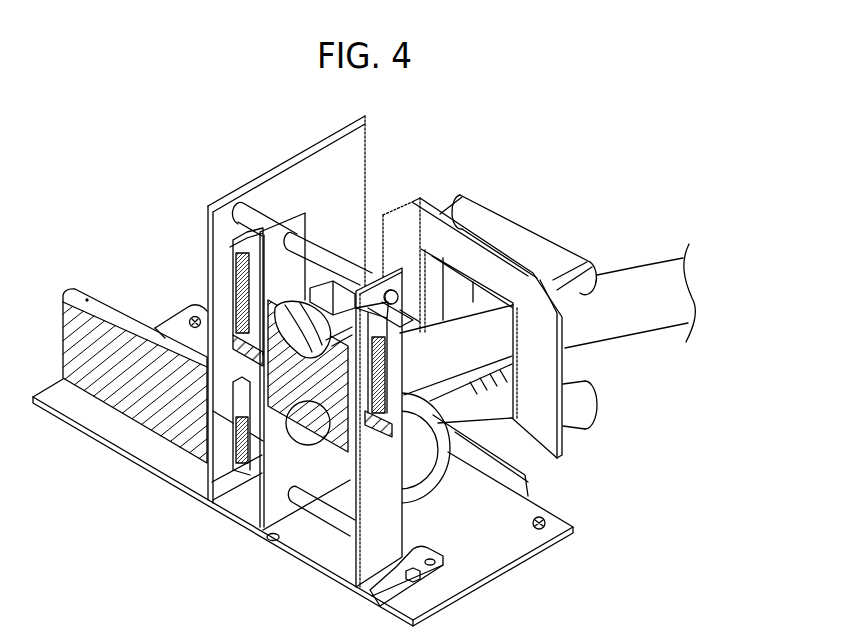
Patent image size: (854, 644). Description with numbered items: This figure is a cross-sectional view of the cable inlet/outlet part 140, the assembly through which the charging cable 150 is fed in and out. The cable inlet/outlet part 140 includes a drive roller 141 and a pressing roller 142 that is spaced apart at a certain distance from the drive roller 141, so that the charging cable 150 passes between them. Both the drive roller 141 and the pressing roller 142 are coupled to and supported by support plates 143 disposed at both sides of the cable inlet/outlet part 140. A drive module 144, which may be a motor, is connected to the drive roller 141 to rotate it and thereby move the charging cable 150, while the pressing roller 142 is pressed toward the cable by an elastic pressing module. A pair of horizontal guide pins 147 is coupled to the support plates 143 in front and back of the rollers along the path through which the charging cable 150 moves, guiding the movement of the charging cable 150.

The cable inlet/outlet part 140 is at (106, 94).
The drive roller 141 is at (540, 497).
The pressing roller 142 is at (293, 303).
The support plates 143 is at (533, 448).
The drive module 144 is at (147, 403).
The horizontal guide pins 147 is at (520, 237).
The charging cable 150 is at (617, 283).